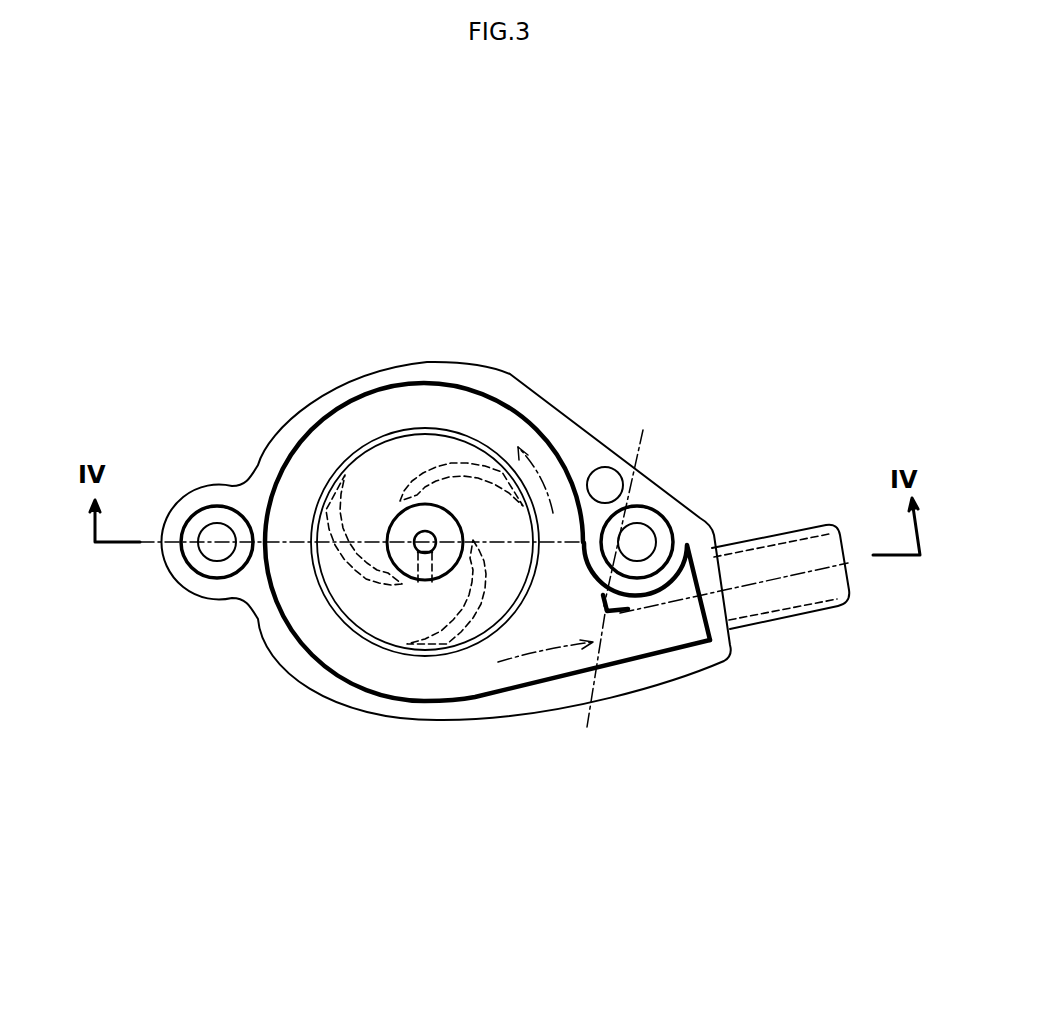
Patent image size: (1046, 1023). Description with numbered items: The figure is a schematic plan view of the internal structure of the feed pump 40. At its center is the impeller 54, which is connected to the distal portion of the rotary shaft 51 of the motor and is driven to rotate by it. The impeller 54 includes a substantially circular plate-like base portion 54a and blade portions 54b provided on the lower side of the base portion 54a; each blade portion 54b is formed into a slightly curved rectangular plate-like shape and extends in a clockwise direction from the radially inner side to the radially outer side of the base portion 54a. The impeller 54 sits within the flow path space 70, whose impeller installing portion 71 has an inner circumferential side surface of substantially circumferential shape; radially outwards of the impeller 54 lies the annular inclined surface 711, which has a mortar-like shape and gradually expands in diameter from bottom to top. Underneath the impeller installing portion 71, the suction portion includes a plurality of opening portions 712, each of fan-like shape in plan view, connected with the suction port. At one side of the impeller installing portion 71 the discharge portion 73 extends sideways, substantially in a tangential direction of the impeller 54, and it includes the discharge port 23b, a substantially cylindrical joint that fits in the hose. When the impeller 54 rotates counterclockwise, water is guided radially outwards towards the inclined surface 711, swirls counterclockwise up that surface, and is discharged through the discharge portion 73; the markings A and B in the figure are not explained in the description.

The feed pump 40 is at (235, 283).
The flow path space 70 is at (350, 393).
The impeller installing portion 71 is at (335, 442).
The inclined surface 711 is at (312, 465).
The opening portion 712 is at (421, 478).
The rotary shaft 51 is at (426, 530).
The impeller 54 is at (335, 606).
The base portion 54a is at (350, 583).
The blade portion 54b is at (463, 470).
The discharge portion 73 is at (660, 628).
The discharge port 23b is at (765, 533).
The position A is at (633, 503).
The position B is at (587, 702).